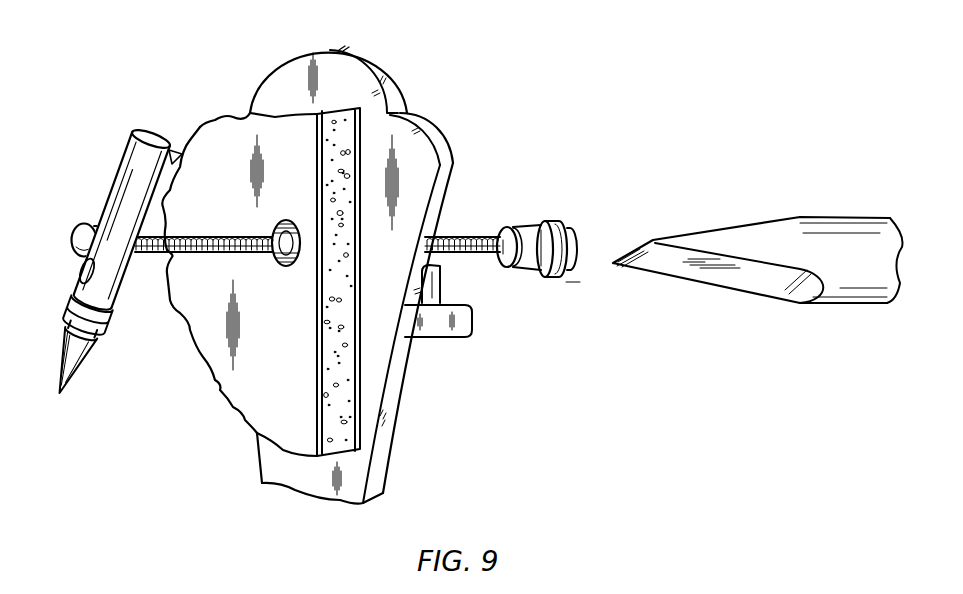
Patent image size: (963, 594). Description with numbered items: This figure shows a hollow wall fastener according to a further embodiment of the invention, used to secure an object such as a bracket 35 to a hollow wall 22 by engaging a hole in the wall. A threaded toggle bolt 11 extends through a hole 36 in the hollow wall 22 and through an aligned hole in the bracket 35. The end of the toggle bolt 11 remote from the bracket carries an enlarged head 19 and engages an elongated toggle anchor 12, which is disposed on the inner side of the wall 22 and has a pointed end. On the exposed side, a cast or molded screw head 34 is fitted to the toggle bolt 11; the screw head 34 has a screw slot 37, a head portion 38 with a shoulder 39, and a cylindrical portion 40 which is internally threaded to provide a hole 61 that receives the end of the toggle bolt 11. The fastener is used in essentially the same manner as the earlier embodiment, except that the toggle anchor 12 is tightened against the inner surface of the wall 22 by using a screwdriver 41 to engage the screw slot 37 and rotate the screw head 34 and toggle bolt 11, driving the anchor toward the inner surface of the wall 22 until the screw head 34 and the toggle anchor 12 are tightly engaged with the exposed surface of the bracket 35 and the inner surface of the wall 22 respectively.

The threaded toggle bolt 11 is at (456, 238).
The toggle anchor 12 is at (120, 168).
The head 19 is at (72, 226).
The hollow wall 22 is at (216, 394).
The screw head 34 is at (568, 285).
The bracket 35 is at (362, 57).
The hole 36 is at (282, 268).
The screw slot 37 is at (575, 238).
The head portion 38 is at (559, 222).
The shoulder 39 is at (545, 276).
The cylindrical portion 40 is at (518, 225).
The screwdriver 41 is at (820, 218).
The hole 61 is at (505, 268).